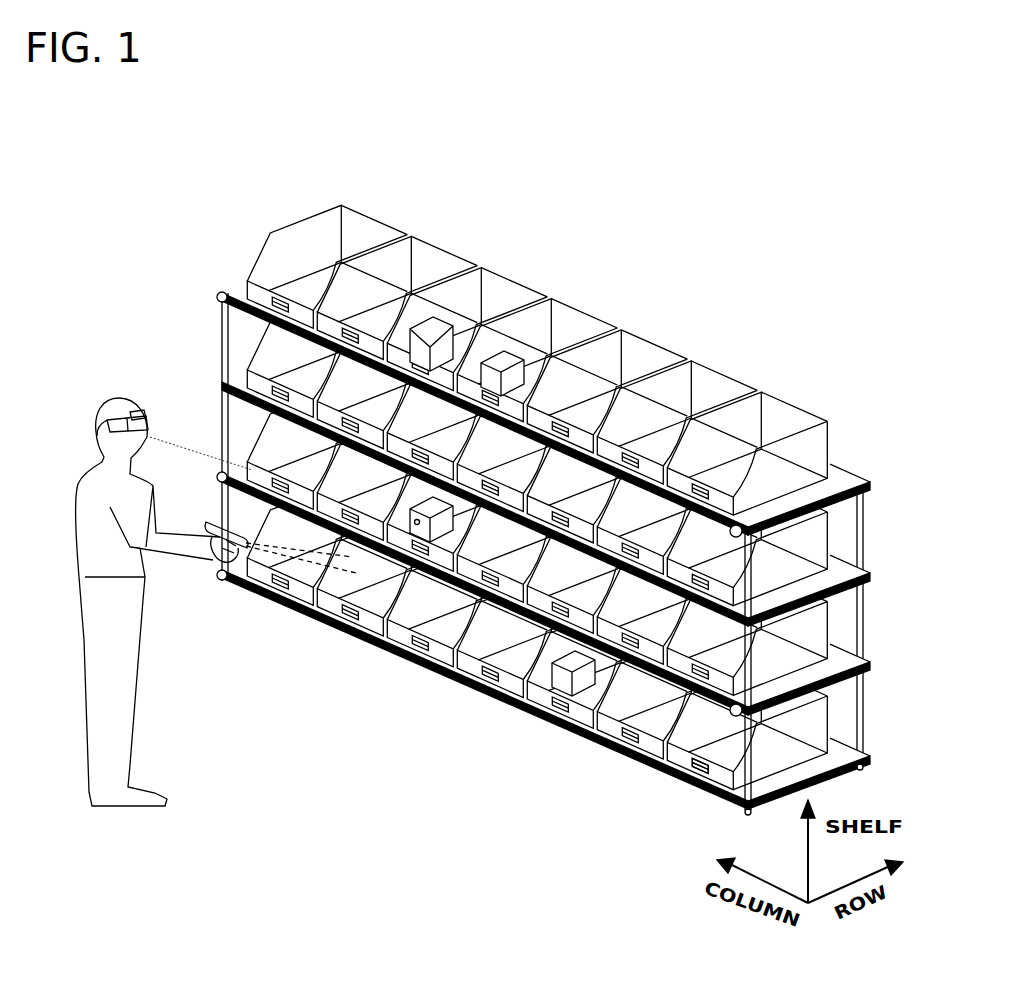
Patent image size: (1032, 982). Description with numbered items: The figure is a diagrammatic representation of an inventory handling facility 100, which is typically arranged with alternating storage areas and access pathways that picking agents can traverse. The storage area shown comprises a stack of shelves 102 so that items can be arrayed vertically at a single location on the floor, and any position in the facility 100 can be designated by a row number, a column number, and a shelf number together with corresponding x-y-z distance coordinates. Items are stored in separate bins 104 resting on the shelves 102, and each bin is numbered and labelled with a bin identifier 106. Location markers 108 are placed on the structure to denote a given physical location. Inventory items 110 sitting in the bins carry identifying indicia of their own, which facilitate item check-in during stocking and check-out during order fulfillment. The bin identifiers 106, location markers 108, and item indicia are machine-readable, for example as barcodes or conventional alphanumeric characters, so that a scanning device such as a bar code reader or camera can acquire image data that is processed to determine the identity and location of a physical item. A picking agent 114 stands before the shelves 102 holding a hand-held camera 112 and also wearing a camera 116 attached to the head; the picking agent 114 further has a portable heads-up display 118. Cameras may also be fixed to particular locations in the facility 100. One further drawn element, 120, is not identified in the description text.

The inventory handling facility 100 is at (778, 100).
The shelves 102 is at (568, 520).
The bins 104 is at (812, 419).
The bin identifier 106 is at (700, 772).
The location marker 108 is at (739, 526).
The inventory item 110 is at (563, 686).
The hand-held camera 112 is at (222, 560).
The picking agent 114 is at (88, 475).
The worn camera 116 is at (110, 417).
The portable heads-up display 118 is at (137, 412).
The item 120 is at (432, 340).